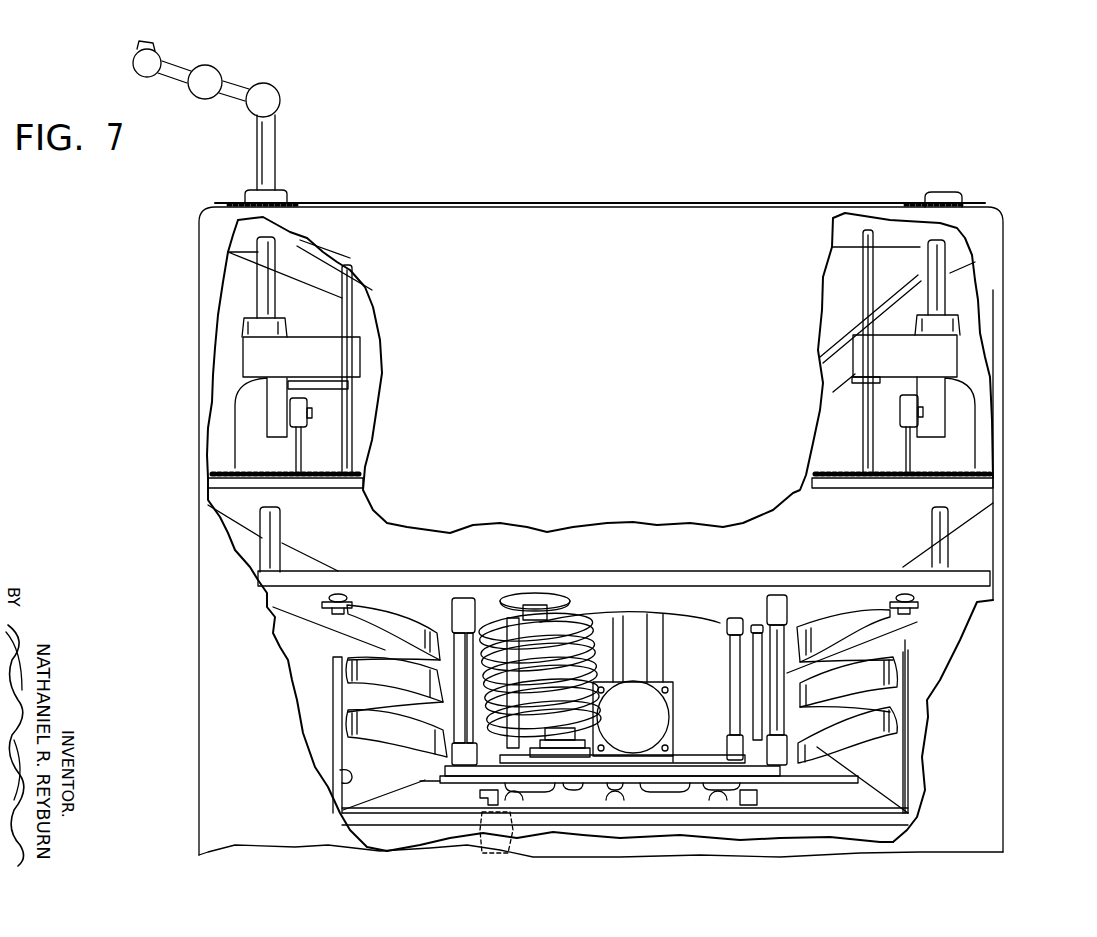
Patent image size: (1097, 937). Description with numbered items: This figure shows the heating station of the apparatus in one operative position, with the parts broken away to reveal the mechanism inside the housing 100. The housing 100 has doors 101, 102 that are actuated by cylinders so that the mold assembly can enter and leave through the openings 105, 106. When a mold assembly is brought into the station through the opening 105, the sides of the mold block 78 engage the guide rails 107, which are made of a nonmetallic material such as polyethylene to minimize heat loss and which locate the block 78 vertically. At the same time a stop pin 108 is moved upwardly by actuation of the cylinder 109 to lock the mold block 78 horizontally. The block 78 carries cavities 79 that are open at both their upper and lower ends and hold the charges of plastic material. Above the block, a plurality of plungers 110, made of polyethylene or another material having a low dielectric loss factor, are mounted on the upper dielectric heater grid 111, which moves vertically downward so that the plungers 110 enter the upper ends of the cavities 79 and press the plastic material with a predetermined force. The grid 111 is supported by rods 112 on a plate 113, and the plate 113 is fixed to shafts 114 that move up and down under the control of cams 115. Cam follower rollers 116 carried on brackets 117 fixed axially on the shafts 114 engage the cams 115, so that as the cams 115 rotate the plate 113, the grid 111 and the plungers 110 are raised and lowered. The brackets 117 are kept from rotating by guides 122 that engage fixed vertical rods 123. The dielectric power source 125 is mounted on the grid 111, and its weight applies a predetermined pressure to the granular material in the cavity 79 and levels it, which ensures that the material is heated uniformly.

The housing 100 is at (999, 259).
The door 101 is at (895, 767).
The door 102 is at (400, 767).
The opening 105 is at (903, 762).
The opening 106 is at (345, 782).
The guide rails 107 is at (860, 808).
The stop pin 108 is at (482, 796).
The cylinder 109 is at (478, 838).
The plungers 110 is at (568, 783).
The upper dielectric heater grid 111 is at (455, 770).
The rods 112 is at (778, 652).
The plate 113 is at (863, 576).
The shafts 114 is at (265, 530).
The cams 115 is at (247, 443).
The cam follower rollers 116 is at (307, 425).
The brackets 117 is at (253, 378).
The guides 122 is at (345, 355).
The fixed vertical rods 123 is at (345, 400).
The dielectric power source 125 is at (586, 604).
The mold block 78 is at (747, 806).
The cavities 79 is at (572, 788).